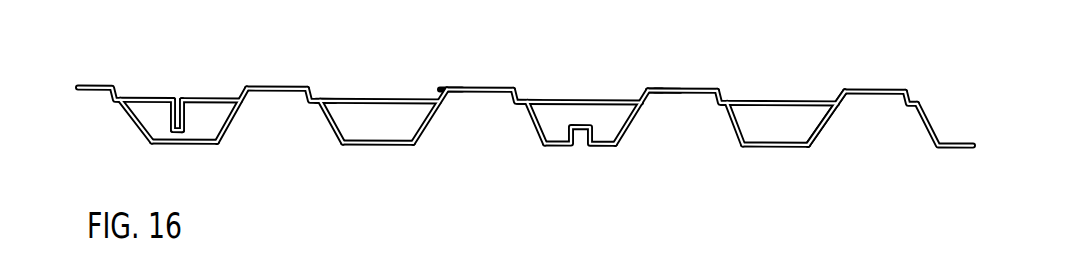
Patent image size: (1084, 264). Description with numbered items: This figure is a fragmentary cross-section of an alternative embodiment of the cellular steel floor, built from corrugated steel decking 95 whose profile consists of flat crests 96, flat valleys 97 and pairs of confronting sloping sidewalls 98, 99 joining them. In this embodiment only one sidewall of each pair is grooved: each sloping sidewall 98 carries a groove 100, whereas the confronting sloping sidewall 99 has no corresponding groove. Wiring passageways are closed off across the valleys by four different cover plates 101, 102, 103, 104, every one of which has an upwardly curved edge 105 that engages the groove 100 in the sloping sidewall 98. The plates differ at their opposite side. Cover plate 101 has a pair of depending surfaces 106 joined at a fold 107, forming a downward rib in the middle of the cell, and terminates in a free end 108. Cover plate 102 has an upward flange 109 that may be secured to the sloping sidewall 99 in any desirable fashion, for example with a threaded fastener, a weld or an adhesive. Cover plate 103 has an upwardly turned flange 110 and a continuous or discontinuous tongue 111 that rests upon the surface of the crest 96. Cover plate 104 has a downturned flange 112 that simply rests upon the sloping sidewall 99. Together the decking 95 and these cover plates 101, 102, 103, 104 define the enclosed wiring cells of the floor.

The decking 95 is at (337, 158).
The crest 96 is at (273, 86).
The valley 97 is at (378, 146).
The sloping sidewall 98 is at (135, 120).
The sloping sidewall 99 is at (232, 118).
The groove 100 is at (116, 97).
The cover plate 101 is at (146, 98).
The cover plate 102 is at (377, 98).
The cover plate 103 is at (568, 99).
The cover plate 104 is at (786, 101).
The upwardly curved edge 105 is at (322, 98).
The depending surface 106 is at (168, 128).
The fold 107 is at (176, 138).
The free end 108 is at (212, 98).
The upward flange 109 is at (432, 90).
The upwardly turned flange 110 is at (643, 86).
The tongue 111 is at (667, 86).
The downturned flange 112 is at (823, 115).